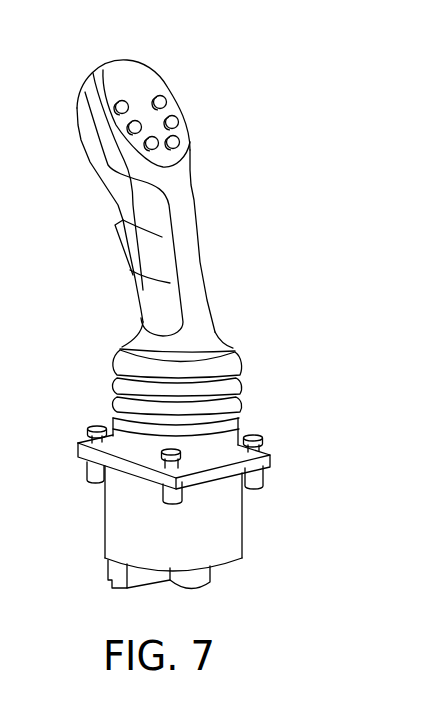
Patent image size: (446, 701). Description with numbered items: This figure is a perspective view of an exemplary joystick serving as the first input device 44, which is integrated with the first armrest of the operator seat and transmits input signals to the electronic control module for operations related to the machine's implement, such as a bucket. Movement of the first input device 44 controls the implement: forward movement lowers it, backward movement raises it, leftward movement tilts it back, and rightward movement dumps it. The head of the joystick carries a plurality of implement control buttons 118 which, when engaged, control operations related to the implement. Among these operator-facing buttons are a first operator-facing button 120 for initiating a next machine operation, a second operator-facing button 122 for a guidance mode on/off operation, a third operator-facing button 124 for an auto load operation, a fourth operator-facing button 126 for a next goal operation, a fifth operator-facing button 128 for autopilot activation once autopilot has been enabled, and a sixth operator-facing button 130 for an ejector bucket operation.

The first input device 44 is at (196, 260).
The plurality of implement control buttons 118 is at (149, 49).
The first operator-facing button 120 is at (117, 101).
The second operator-facing button 122 is at (128, 127).
The third operator-facing button 124 is at (146, 145).
The fourth operator-facing button 126 is at (166, 97).
The fifth operator-facing button 128 is at (179, 122).
The sixth operator-facing button 130 is at (180, 145).